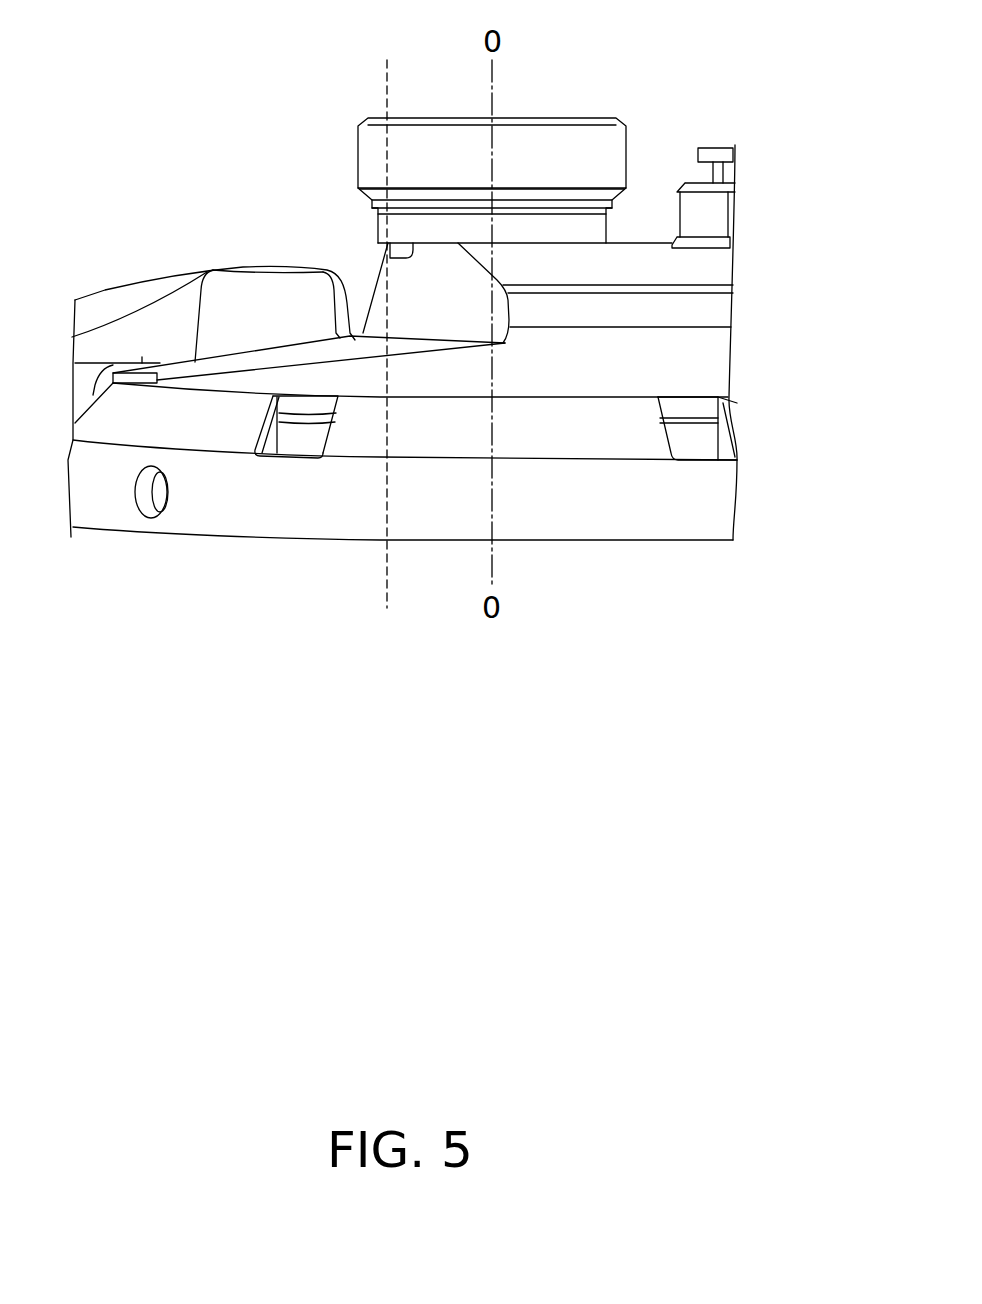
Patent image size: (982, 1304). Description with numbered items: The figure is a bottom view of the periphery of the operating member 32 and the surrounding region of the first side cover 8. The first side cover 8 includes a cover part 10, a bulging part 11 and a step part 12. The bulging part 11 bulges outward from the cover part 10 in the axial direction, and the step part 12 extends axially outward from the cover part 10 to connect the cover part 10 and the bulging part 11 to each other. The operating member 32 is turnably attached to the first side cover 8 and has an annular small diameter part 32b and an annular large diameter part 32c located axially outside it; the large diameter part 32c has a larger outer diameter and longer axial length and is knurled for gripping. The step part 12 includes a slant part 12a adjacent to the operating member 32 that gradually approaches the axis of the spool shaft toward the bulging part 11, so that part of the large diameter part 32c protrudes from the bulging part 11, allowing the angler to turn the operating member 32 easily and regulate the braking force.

The first side cover 8 is at (233, 540).
The cover part 10 is at (232, 385).
The bulging part 11 is at (652, 243).
The step part 12 is at (508, 345).
The slant part 12a is at (428, 302).
The operating member 32 is at (578, 121).
The small diameter part 32b is at (607, 230).
The large diameter part 32c is at (626, 152).